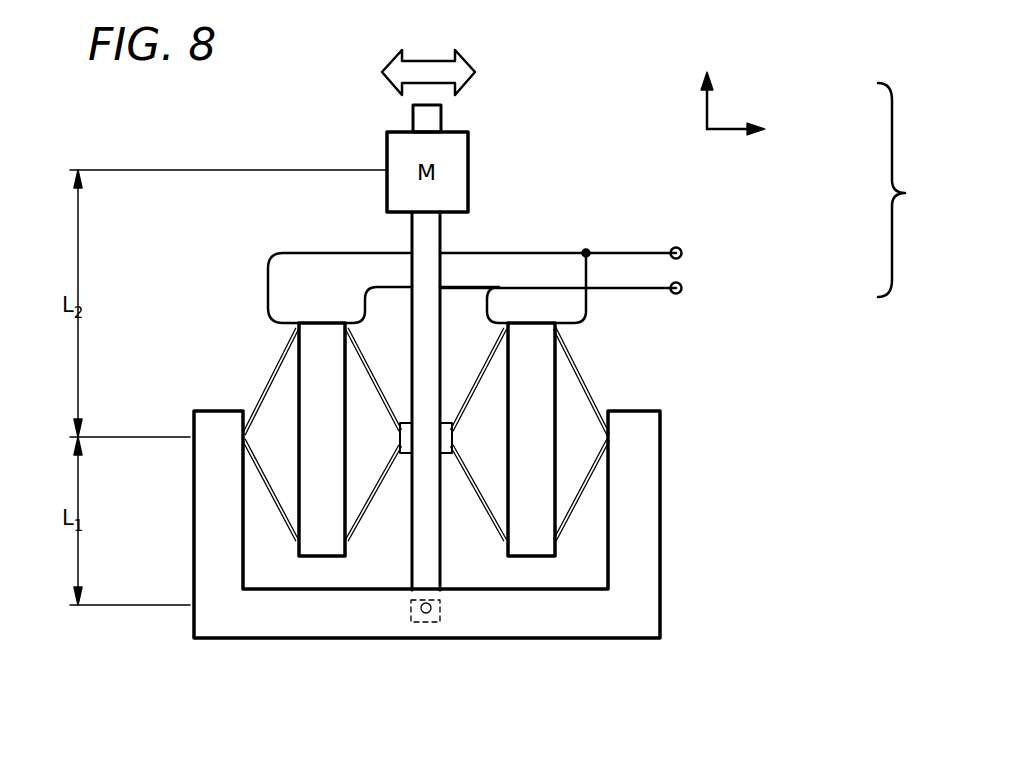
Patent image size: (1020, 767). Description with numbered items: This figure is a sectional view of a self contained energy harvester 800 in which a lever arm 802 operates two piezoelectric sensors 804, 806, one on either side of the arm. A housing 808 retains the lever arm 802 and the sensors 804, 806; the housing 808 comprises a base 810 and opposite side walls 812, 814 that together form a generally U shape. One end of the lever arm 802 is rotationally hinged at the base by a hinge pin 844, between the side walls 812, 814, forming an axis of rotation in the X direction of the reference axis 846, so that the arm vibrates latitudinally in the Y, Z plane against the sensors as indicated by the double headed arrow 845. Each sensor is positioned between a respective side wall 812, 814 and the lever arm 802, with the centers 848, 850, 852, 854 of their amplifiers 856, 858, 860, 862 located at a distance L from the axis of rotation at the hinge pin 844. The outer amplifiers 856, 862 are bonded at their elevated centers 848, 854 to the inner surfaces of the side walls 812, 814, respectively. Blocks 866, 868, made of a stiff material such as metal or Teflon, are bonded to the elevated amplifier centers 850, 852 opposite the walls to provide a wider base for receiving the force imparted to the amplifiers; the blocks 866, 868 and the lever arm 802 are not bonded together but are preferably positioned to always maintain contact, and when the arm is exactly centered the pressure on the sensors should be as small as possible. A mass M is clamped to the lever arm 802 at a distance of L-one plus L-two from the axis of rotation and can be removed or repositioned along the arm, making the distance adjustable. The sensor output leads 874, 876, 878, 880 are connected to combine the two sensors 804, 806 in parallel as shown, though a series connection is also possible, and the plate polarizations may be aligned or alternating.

The self contained energy harvester 800 is at (758, 294).
The lever arm 802 is at (442, 118).
The piezoelectric sensor 804 is at (525, 544).
The piezoelectric sensor 806 is at (328, 544).
The housing 808 is at (668, 600).
The base 810 is at (550, 627).
The side wall 812 is at (635, 411).
The side wall 814 is at (199, 421).
The hinge pin 844 is at (422, 618).
The double headed arrow 845 is at (421, 58).
The reference axis 846 is at (719, 145).
The amplifier center 848 is at (610, 441).
The amplifier center 850 is at (444, 446).
The amplifier center 852 is at (405, 432).
The amplifier center 854 is at (243, 437).
The amplifier 856 is at (586, 388).
The amplifier 858 is at (476, 390).
The amplifier 860 is at (374, 390).
The amplifier 862 is at (272, 388).
The block 866 is at (443, 425).
The block 868 is at (407, 456).
The sensor output lead 874 is at (588, 270).
The sensor output lead 876 is at (480, 314).
The sensor output lead 878 is at (372, 303).
The sensor output lead 880 is at (302, 251).